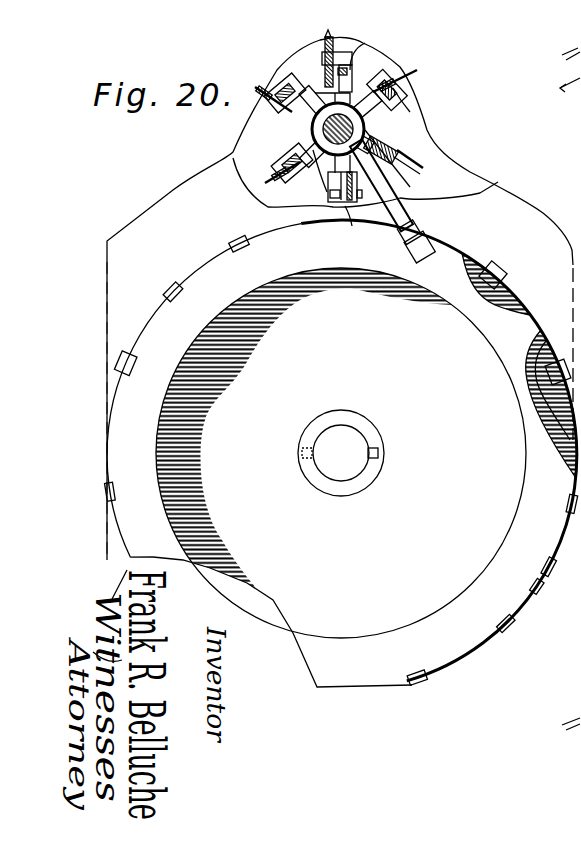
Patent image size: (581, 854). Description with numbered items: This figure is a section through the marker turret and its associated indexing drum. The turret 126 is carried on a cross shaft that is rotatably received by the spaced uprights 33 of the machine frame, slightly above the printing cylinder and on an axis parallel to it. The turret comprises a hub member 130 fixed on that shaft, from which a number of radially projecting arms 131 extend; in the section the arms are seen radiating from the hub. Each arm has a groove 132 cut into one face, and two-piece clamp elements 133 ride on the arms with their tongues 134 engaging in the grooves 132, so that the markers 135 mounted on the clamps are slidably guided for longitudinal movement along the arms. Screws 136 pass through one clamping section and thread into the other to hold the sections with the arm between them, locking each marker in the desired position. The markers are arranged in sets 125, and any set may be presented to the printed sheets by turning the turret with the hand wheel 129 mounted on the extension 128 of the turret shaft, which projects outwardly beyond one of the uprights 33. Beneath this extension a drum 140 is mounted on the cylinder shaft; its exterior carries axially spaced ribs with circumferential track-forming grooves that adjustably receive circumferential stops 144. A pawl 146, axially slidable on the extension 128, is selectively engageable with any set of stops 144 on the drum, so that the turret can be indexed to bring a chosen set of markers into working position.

The uprights 33 is at (492, 176).
The sets of markers 125 is at (420, 77).
The rotor or turret 126 is at (288, 119).
The extension 128 is at (352, 130).
The hand wheel 129 is at (574, 66).
The hub member 130 is at (398, 62).
The radially projecting arms 131 is at (318, 92).
The grooves 132 is at (327, 196).
The two-piece clamp elements 133 is at (416, 112).
The tongues 134 is at (365, 232).
The markers 135 is at (254, 88).
The screws 136 is at (420, 162).
The drum 140 is at (473, 504).
The circumferential stops 144 is at (168, 283).
The pawl 146 is at (410, 213).